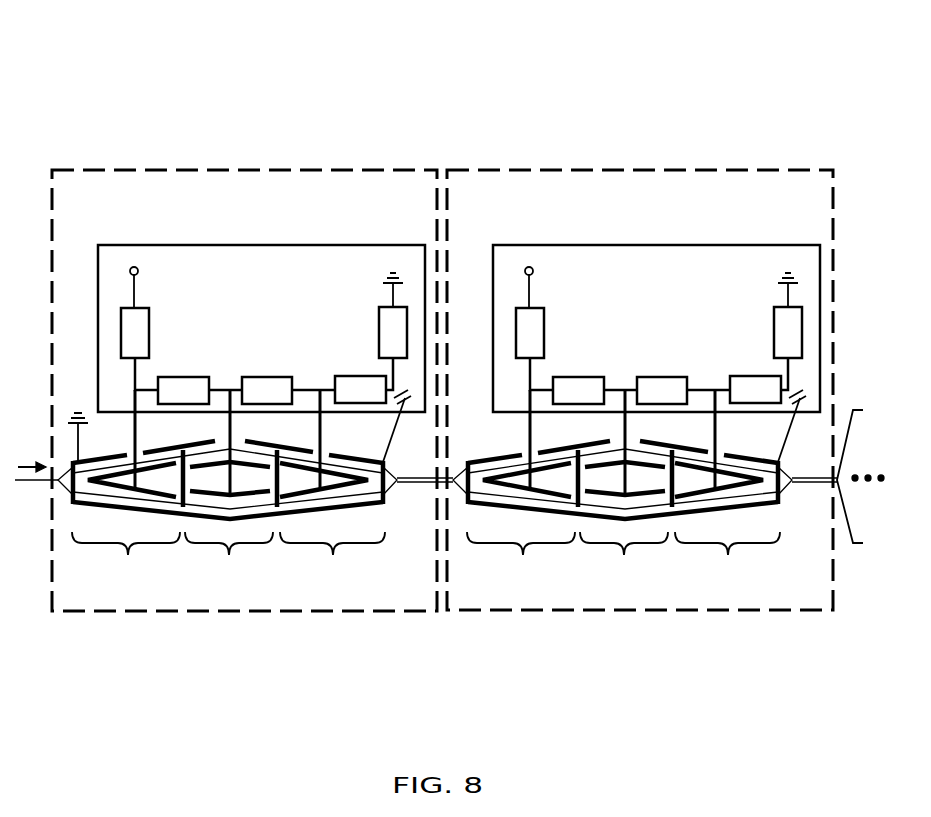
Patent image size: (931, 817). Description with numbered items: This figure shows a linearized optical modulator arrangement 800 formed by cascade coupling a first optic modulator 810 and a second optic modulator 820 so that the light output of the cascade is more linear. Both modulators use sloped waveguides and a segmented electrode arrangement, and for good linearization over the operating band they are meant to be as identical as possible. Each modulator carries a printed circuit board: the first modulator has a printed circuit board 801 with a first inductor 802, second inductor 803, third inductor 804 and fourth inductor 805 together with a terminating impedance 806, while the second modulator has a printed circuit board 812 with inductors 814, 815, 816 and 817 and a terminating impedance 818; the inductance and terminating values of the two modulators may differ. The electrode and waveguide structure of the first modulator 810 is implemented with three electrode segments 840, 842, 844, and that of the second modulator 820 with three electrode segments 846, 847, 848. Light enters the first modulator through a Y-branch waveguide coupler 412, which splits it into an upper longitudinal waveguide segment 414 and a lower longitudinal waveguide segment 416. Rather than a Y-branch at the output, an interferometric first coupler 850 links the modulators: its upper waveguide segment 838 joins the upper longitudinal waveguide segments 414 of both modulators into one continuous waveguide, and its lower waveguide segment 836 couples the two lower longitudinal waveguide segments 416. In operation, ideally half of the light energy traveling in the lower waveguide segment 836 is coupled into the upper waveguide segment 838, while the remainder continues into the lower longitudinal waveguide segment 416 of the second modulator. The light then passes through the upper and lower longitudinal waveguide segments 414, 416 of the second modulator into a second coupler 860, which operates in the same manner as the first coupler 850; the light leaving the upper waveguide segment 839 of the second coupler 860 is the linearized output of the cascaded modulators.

The cascaded optical modulator system 800 is at (364, 58).
The first optic modulator 810 is at (162, 168).
The second optic modulator 820 is at (681, 168).
The printed circuit board 801 is at (184, 244).
The printed circuit board 812 is at (717, 244).
The first inductor 802 is at (150, 332).
The second inductor 803 is at (180, 377).
The third inductor 804 is at (268, 376).
The fourth inductor 805 is at (350, 376).
The terminating impedance 806 is at (378, 327).
The first inductor 814 is at (545, 332).
The resistor 815 is at (575, 377).
The second inductor 816 is at (663, 376).
The third inductor 817 is at (745, 376).
The termination resistor 818 is at (773, 327).
The Y-branch waveguide coupler 412 is at (57, 484).
The upper longitudinal waveguide segment 414 is at (103, 474).
The lower longitudinal waveguide segment 416 is at (118, 500).
The lower waveguide segment 836 is at (402, 483).
The upper waveguide segment 838 is at (410, 477).
The upper waveguide segment 839 is at (803, 474).
The electrode segment 840 is at (126, 563).
The electrode segment 842 is at (229, 563).
The electrode segment 844 is at (332, 563).
The electrode segment 846 is at (521, 563).
The electrode segment 847 is at (624, 563).
The electrode segment 848 is at (727, 563).
The first coupler 850 is at (412, 545).
The second coupler 860 is at (810, 524).